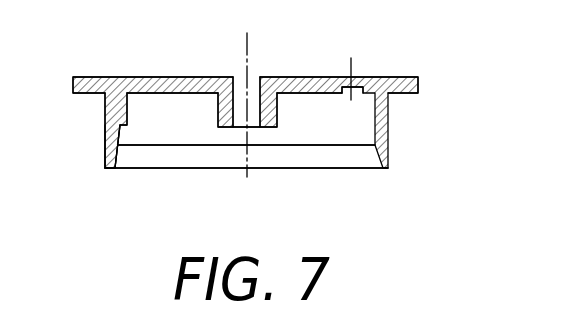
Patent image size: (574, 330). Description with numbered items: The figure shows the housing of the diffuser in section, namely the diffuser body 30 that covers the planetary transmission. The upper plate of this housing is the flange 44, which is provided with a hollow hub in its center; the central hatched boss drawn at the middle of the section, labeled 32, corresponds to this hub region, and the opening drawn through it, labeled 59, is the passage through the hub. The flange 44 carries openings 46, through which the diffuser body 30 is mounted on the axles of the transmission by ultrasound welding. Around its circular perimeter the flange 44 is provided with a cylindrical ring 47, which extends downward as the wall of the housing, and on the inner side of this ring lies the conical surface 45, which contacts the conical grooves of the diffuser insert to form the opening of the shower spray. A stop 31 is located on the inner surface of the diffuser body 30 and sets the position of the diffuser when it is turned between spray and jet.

The diffuser body 30 is at (402, 100).
The stop 31 is at (132, 109).
The central boss 32 is at (266, 125).
The flange 44 is at (78, 76).
The conical surface 45 is at (125, 157).
The openings 46 is at (337, 79).
The cylindrical ring 47 is at (100, 125).
The central bore 59 is at (254, 98).